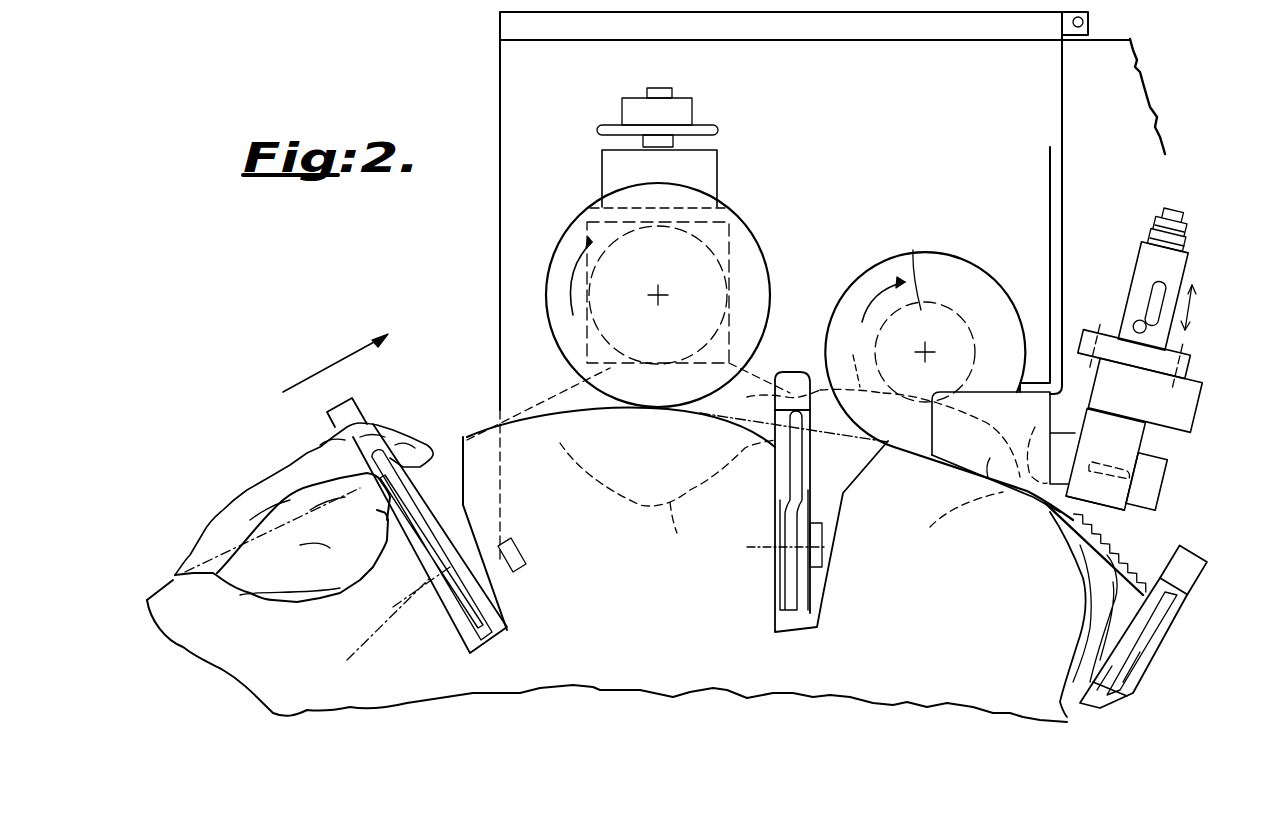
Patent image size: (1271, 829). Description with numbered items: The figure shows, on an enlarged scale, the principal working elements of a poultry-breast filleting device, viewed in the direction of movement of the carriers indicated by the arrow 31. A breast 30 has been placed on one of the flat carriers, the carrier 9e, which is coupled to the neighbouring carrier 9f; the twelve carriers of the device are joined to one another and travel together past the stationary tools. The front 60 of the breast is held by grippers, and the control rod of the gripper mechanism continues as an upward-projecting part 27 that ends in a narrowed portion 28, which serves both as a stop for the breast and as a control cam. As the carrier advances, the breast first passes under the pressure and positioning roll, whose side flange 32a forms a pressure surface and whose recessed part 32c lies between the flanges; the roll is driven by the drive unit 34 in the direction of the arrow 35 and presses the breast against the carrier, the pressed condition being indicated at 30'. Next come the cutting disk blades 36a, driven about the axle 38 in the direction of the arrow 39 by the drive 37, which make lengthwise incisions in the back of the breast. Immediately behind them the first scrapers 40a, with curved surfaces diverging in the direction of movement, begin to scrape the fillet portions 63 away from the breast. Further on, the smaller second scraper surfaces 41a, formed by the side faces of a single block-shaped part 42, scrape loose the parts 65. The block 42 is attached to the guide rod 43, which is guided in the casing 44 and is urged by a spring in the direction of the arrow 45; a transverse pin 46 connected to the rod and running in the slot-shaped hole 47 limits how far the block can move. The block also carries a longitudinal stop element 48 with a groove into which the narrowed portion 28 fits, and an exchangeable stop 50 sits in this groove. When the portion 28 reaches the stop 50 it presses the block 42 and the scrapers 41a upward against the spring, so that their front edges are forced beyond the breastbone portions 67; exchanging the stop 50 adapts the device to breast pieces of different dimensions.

The flat carrier 9e is at (172, 598).
The flat carrier 9f is at (486, 435).
The upward-projecting part 27 is at (805, 467).
The narrowed portion 28 is at (797, 385).
The breast 30 is at (611, 466).
The breast pressed against carrier 30' is at (643, 453).
The arrow 31 is at (335, 352).
The side flange 32a is at (742, 222).
The recessed part 32c is at (745, 252).
The drive unit 34 is at (705, 160).
The arrow 35 is at (572, 272).
The cutting disk blade 36a is at (957, 268).
The drive 37 is at (913, 266).
The axle 38 is at (932, 350).
The arrow 39 is at (882, 300).
The first scraper 40a is at (988, 478).
The second scraper surface 41a is at (1112, 508).
The block-shape part 42 is at (1148, 441).
The guide rod 43 is at (1140, 408).
The casing 44 is at (1190, 268).
The arrow 45 is at (1193, 308).
The transverse pin 46 is at (1150, 330).
The slot-shaped hole 47 is at (1147, 300).
The longitudinal stop element 48 is at (1065, 450).
The exchangeable stop 50 is at (1158, 478).
The front of the breast 60 is at (403, 433).
The scraped portion 63 is at (957, 485).
The scraped-loose part 65 is at (1010, 483).
The breastbone portions 67 is at (1137, 557).